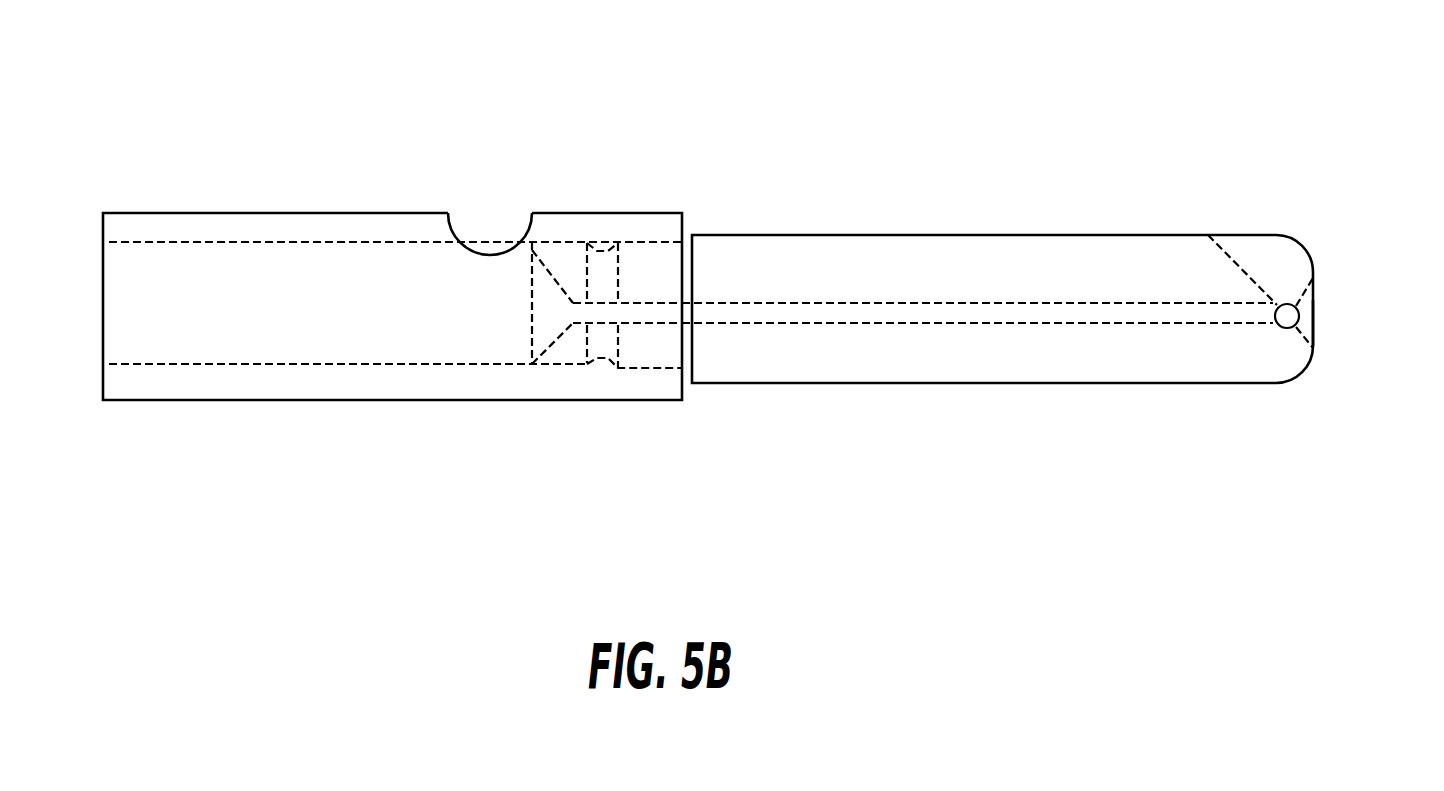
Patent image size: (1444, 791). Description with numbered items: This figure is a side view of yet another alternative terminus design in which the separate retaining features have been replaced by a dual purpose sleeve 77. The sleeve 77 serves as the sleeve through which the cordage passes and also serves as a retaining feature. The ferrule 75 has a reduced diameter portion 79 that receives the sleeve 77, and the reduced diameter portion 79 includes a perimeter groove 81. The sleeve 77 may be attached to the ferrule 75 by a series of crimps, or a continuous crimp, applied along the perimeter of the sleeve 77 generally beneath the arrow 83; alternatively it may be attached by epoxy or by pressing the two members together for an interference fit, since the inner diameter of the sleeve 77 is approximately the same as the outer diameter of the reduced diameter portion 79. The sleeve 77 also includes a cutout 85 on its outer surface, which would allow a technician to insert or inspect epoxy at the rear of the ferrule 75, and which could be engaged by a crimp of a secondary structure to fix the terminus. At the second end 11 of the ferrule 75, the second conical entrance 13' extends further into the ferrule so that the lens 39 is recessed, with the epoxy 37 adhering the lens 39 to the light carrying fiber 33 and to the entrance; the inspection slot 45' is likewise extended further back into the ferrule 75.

The second end 11 is at (762, 291).
The second conical entrance 13' is at (1340, 387).
The light carrying fiber 33 is at (1115, 313).
The epoxy 37 is at (1272, 322).
The lens 39 is at (1299, 311).
The inspection slot 45' is at (1260, 208).
The ferrule 75 is at (900, 262).
The dual purpose sleeve 77 is at (235, 213).
The reduced diameter portion 79 is at (648, 385).
The perimeter groove 81 is at (602, 250).
The arrow 83 is at (615, 190).
The cutout 85 is at (465, 205).